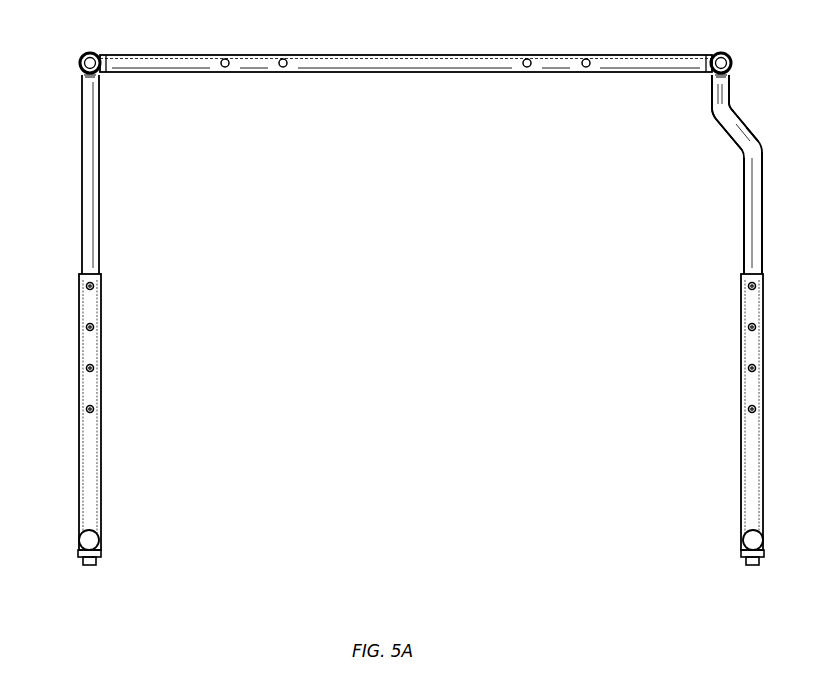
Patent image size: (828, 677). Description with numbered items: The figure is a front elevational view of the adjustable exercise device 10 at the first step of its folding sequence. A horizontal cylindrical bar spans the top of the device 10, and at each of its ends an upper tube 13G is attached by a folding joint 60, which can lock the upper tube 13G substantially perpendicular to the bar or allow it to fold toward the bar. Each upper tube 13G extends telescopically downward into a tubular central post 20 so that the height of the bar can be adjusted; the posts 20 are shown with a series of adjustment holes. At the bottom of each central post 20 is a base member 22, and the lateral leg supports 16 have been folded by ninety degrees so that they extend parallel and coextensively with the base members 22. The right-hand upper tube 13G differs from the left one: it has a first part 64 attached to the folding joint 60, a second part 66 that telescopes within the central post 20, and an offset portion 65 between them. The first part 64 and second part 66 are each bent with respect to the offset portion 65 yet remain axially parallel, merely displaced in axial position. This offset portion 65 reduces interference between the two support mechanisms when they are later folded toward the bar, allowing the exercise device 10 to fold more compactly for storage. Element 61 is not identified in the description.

The adjustable exercise device 10 is at (270, 576).
The upper tube 13G is at (90, 173).
The lateral leg support 16 is at (102, 556).
The central post 20 is at (101, 488).
The base member 22 is at (79, 543).
The folding joint 60 is at (82, 57).
The top cross bar 61 is at (406, 63).
The first part 64 is at (729, 92).
The offset portion 65 is at (746, 132).
The second part 66 is at (762, 210).